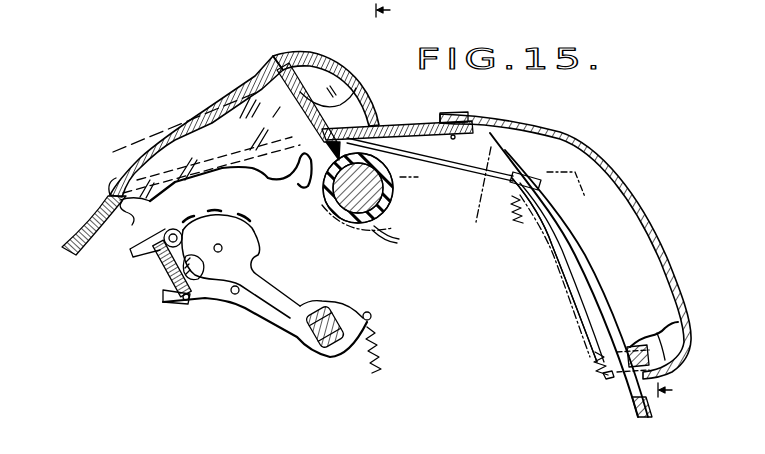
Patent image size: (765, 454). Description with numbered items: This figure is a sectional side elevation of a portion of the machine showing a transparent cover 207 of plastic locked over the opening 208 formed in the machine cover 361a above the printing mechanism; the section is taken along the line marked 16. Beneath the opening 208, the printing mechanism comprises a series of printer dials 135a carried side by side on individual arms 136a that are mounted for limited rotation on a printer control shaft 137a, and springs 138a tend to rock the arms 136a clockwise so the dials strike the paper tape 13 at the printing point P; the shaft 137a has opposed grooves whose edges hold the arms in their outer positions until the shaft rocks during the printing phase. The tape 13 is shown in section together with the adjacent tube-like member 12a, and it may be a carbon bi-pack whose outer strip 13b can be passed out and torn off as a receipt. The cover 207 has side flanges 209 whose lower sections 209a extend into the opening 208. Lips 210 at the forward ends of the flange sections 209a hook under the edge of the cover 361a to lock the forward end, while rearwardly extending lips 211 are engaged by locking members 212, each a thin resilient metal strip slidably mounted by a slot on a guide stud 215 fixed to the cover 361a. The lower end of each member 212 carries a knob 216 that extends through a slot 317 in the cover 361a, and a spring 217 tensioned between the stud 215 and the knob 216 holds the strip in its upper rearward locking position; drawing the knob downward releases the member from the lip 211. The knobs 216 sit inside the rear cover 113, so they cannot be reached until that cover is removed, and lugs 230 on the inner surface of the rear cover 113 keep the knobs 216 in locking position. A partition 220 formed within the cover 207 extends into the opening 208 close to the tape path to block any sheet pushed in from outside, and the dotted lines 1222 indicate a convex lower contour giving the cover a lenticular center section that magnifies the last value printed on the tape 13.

The section line 16- 16 is at (534, 202).
The transparent cover 207 is at (157, 125).
The side flanges 209 is at (316, 54).
The lower flange sections 209a is at (173, 172).
The partition 220 is at (344, 96).
The opening 208 is at (373, 120).
The dotted lines 1222 is at (145, 134).
The machine cover 361a is at (72, 226).
The lips 210 is at (128, 210).
The rearwardly extending lips 211 is at (231, 177).
The tube 12a is at (389, 211).
The printing point P is at (326, 185).
The paper tape 13 is at (377, 231).
The outer strip 13b is at (388, 237).
The locking members 212 is at (453, 164).
The guide stud 215 is at (543, 175).
The rear cover 113 is at (604, 158).
The knob 216 is at (628, 337).
The slot 317 is at (630, 390).
The spring 217 is at (573, 317).
The lugs 230 is at (673, 330).
The printer dials 135a is at (220, 208).
The arms 136a is at (297, 305).
The printer control shaft 137a is at (310, 337).
The springs 138a is at (380, 353).